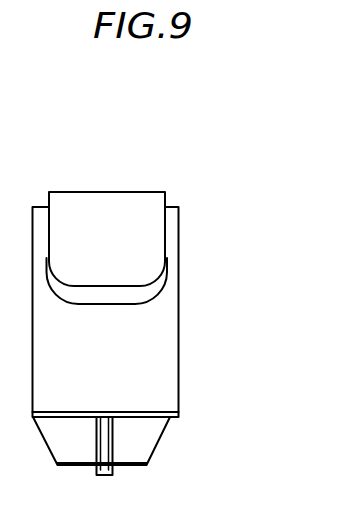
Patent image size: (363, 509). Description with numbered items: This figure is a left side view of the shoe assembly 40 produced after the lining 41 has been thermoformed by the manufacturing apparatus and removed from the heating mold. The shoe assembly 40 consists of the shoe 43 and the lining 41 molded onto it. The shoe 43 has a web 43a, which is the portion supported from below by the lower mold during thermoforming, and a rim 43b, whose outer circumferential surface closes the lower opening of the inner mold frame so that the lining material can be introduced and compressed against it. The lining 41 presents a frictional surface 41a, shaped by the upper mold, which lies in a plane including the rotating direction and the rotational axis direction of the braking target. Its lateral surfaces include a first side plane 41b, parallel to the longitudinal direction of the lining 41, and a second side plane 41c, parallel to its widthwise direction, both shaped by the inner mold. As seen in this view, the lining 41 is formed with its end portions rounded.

The shoe assembly 40 is at (262, 295).
The lining 41 is at (184, 210).
The frictional surface 41a is at (128, 205).
The first side plane 41b is at (167, 200).
The second side plane 41c is at (173, 256).
The shoe 43 is at (178, 425).
The web 43a is at (113, 435).
The rim 43b is at (142, 382).